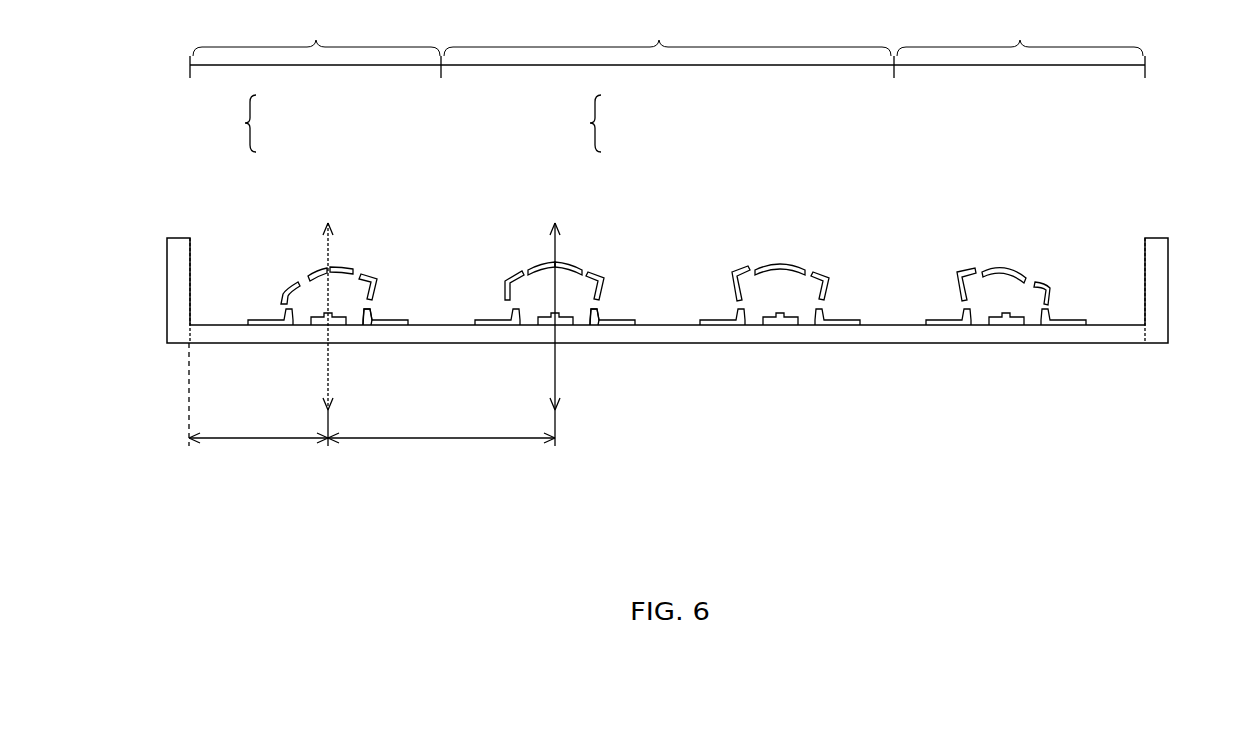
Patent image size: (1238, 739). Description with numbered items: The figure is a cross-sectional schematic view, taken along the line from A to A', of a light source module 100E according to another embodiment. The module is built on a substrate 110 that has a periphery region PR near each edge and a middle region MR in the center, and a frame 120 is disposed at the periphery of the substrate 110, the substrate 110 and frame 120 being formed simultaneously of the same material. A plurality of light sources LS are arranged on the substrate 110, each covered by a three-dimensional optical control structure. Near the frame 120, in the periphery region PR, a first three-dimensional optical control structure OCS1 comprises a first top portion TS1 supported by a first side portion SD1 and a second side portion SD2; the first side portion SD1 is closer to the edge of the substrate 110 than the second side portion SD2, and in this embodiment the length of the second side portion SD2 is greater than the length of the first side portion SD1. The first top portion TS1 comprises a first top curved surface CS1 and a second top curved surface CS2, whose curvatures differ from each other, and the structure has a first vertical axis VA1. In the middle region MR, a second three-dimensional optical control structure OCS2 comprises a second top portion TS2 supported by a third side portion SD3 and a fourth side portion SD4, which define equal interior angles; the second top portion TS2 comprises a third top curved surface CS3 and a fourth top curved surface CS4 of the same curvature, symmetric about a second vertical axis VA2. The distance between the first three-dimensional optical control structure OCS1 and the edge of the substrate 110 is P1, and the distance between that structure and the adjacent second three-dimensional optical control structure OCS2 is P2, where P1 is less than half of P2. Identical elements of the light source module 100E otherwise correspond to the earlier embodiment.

The periphery region PR is at (668, 31).
The middle region MR is at (667, 31).
The first top portion TS1 is at (233, 123).
The second top portion TS2 is at (578, 123).
The first top curved surface CS1 is at (313, 276).
The second top curved surface CS2 is at (347, 265).
The third top curved surface CS3 is at (538, 265).
The fourth top curved surface CS4 is at (570, 265).
The first three-dimensional optical control structure OCS1 is at (373, 270).
The second three-dimensional optical control structure OCS2 is at (603, 277).
The first side portion SD1 is at (281, 302).
The second side portion SD2 is at (378, 292).
The third side portion SD3 is at (503, 292).
The fourth side portion SD4 is at (605, 293).
The first vertical axis VA1 is at (329, 320).
The second vertical axis VA2 is at (558, 321).
The light source LS is at (780, 326).
The substrate 110 is at (1088, 337).
The frame 120 is at (1157, 248).
The distance between the first three-dimensional optical control structure and the e P1 is at (258, 425).
The distance between the first and adjacent second three-dimensional optical control P2 is at (441, 425).
The section line end A is at (128, 410).
The section line end A' is at (1195, 410).
The light source module 100E is at (1137, 490).